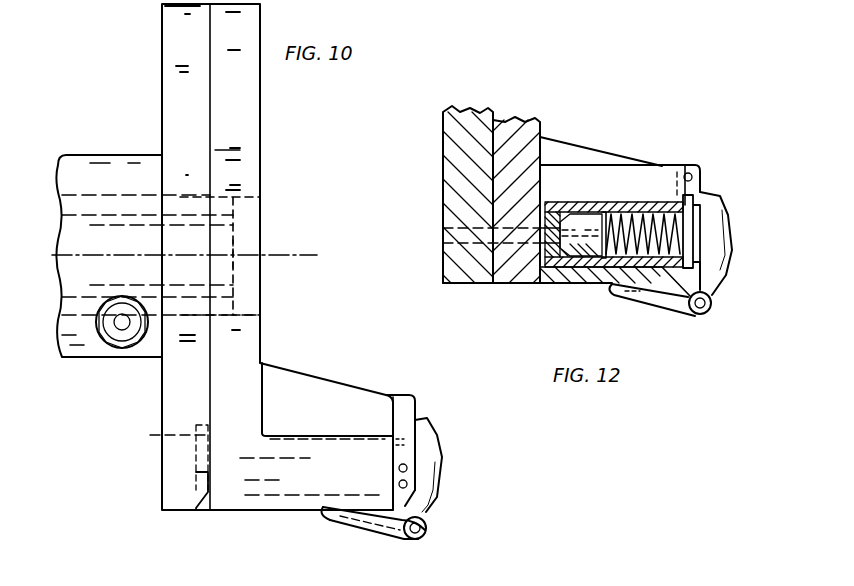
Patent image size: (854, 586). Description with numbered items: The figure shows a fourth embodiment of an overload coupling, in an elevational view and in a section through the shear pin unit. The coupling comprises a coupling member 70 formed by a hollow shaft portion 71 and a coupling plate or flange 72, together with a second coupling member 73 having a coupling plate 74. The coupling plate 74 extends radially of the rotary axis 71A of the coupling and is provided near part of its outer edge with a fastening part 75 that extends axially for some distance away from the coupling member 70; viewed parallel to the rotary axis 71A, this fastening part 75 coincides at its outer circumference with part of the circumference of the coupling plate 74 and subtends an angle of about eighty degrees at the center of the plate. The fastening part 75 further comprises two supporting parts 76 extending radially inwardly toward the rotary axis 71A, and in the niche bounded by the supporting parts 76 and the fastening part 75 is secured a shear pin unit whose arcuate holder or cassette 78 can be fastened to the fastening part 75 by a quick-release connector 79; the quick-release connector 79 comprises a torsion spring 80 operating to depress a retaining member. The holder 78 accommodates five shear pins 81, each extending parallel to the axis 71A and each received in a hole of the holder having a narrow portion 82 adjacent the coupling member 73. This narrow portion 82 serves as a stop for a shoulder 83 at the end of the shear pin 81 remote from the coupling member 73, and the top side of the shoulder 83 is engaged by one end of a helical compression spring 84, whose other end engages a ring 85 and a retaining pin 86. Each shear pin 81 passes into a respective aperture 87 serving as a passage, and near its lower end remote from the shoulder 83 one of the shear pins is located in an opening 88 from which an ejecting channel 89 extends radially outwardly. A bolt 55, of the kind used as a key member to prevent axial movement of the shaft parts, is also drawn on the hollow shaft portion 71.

In FIG. 10, the bolt 55 is at (124, 314).
In FIG. 10, the coupling member 70 is at (158, 40).
In FIG. 12, the coupling member 70 is at (443, 133).
In FIG. 10, the hollow shaft portion 71 is at (86, 155).
In FIG. 10, the rotary axis 71A is at (300, 256).
In FIG. 10, the coupling plate or flange 72 is at (172, 12).
In FIG. 12, the coupling plate or flange 72 is at (466, 112).
In FIG. 10, the coupling member 73 is at (262, 115).
In FIG. 12, the coupling member 73 is at (522, 120).
In FIG. 10, the coupling plate 74 is at (264, 150).
In FIG. 12, the coupling plate 74 is at (548, 130).
In FIG. 10, the fastening part 75 is at (298, 505).
In FIG. 10, the supporting parts 76 is at (304, 383).
In FIG. 12, the supporting parts 76 is at (590, 148).
In FIG. 10, the arcuate holder or cassette 78 is at (398, 392).
In FIG. 12, the arcuate holder or cassette 78 is at (618, 296).
In FIG. 10, the quick-release connector 79 is at (425, 442).
In FIG. 12, the quick-release connector 79 is at (716, 216).
In FIG. 10, the torsion spring 80 is at (440, 477).
In FIG. 12, the torsion spring 80 is at (730, 250).
In FIG. 12, the shear pin 81 is at (548, 284).
In FIG. 12, the narrow portion 82 is at (554, 216).
In FIG. 12, the shoulder 83 is at (592, 216).
In FIG. 12, the helical compression spring 84 is at (582, 270).
In FIG. 12, the ring 85 is at (688, 200).
In FIG. 10, the retaining pin 86 is at (398, 484).
In FIG. 12, the retaining pin 86 is at (692, 172).
In FIG. 12, the aperture 87 is at (445, 243).
In FIG. 10, the opening 88 is at (162, 456).
In FIG. 10, the ejecting channel 89 is at (198, 512).